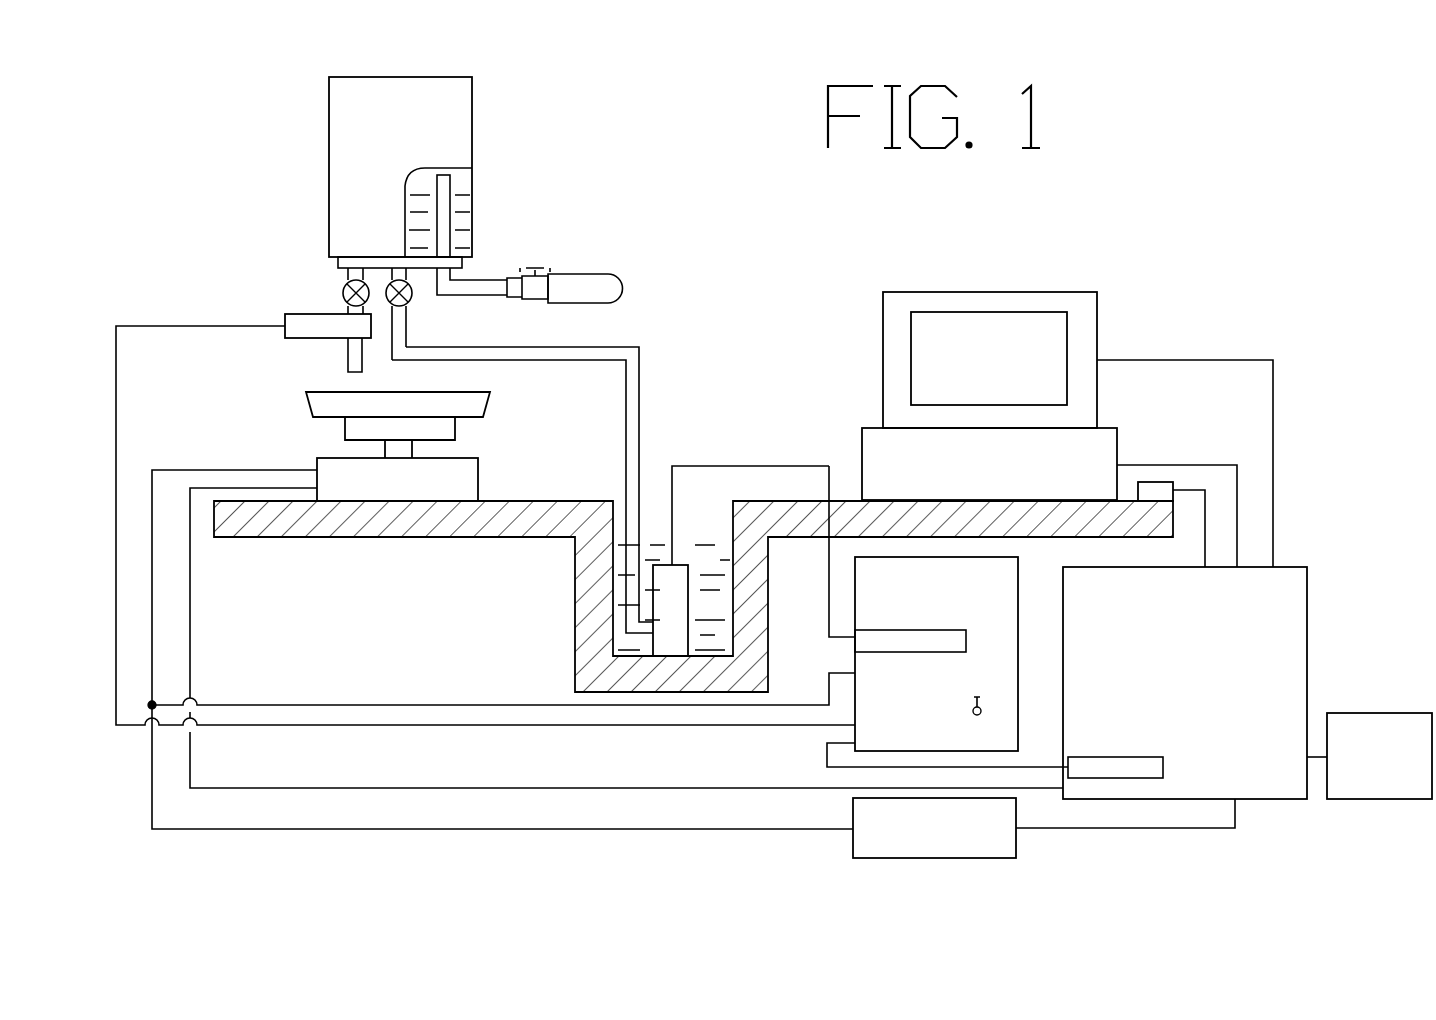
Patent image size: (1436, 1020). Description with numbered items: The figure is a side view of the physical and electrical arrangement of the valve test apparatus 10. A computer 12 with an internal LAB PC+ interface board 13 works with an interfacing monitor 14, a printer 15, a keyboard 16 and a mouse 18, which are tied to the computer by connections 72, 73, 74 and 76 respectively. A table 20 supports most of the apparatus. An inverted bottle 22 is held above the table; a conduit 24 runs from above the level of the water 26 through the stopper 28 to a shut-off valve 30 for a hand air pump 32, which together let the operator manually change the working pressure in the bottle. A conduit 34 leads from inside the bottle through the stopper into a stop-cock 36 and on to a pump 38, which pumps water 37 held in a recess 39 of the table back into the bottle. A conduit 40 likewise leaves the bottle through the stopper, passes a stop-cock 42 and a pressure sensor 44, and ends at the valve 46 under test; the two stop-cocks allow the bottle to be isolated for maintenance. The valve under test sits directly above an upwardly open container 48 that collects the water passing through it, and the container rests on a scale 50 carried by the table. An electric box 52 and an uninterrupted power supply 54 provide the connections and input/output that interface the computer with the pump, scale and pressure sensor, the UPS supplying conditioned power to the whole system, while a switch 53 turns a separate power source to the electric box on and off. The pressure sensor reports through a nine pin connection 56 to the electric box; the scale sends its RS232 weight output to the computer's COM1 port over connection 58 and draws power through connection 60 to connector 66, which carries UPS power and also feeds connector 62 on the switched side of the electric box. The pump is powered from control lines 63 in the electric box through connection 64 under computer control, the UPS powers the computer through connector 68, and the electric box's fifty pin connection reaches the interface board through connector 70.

The valve test apparatus 10 is at (752, 292).
The computer 12 is at (1312, 676).
The interface board 13 is at (1130, 740).
The monitor 14 is at (1105, 333).
The printer 15 is at (1375, 805).
The keyboard 16 is at (1130, 437).
The mouse 18 is at (1176, 487).
The table 20 is at (482, 557).
The inverted bottle 22 is at (490, 152).
The conduit 24 is at (447, 193).
The water 26 is at (460, 226).
The stopper 28 is at (337, 265).
The shut-off valve 30 is at (545, 254).
The hand air pump 32 is at (632, 256).
The conduit 34 is at (634, 333).
The stop-cock 36 is at (412, 305).
The water 37 is at (620, 646).
The pump 38 is at (690, 604).
The recess 39 is at (690, 486).
The conduit 40 is at (343, 276).
The stop-cock 42 is at (340, 298).
The pressure sensor 44 is at (283, 345).
The valve under test 46 is at (338, 370).
The container 48 is at (500, 403).
The scale 50 is at (485, 478).
The electric box 52 is at (1022, 558).
The switch 53 is at (965, 701).
The uninterrupted power supply 54 is at (1022, 856).
The connection 56 is at (125, 404).
The connection 58 is at (198, 597).
The connection 60 is at (160, 645).
The connector 62 is at (340, 693).
The control lines 63 is at (942, 628).
The connection 64 is at (793, 453).
The connector 66 is at (572, 840).
The connector 68 is at (1155, 845).
The connector 70 is at (823, 751).
The connection 72 is at (1200, 348).
The connection 73 is at (1316, 745).
The connection 74 is at (1243, 462).
The connection 76 is at (1210, 515).